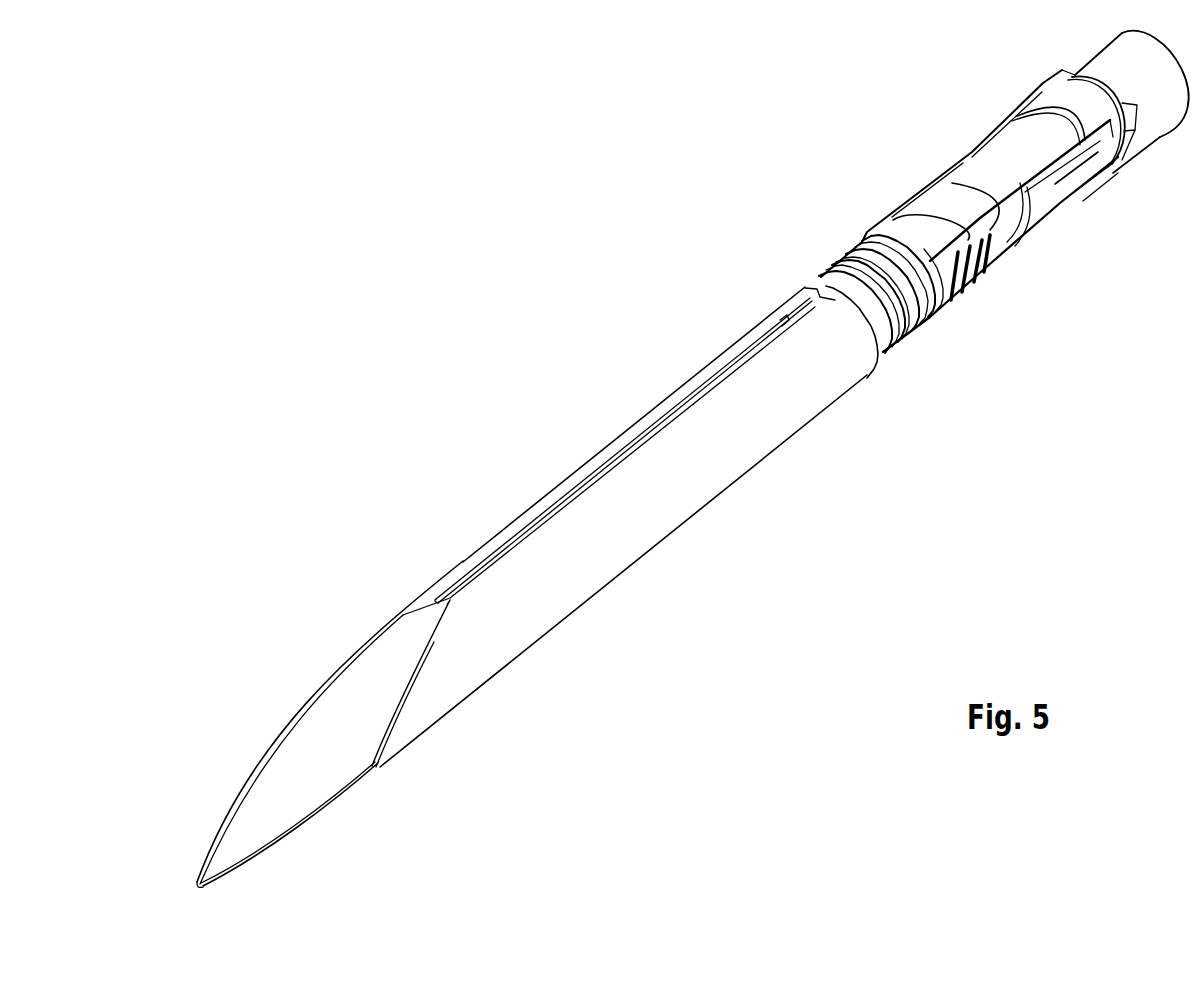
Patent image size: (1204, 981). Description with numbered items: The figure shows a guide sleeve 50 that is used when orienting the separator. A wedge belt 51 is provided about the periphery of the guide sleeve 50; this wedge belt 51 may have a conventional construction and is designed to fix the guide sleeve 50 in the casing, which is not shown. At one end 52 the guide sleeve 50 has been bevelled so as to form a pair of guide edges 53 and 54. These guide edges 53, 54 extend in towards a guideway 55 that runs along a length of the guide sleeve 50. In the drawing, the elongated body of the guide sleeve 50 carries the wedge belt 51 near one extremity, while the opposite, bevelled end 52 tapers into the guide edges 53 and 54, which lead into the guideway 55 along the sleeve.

The guide sleeve 50 is at (683, 488).
The wedge belt 51 is at (1043, 200).
The end 52 is at (423, 705).
The guide edge 53 is at (372, 762).
The guide edge 54 is at (277, 730).
The guideway 55 is at (470, 582).